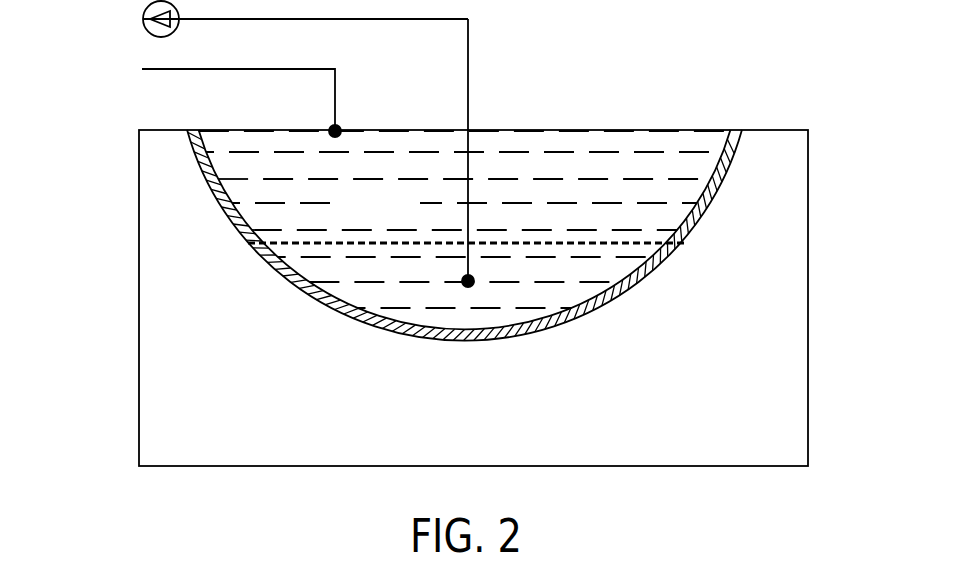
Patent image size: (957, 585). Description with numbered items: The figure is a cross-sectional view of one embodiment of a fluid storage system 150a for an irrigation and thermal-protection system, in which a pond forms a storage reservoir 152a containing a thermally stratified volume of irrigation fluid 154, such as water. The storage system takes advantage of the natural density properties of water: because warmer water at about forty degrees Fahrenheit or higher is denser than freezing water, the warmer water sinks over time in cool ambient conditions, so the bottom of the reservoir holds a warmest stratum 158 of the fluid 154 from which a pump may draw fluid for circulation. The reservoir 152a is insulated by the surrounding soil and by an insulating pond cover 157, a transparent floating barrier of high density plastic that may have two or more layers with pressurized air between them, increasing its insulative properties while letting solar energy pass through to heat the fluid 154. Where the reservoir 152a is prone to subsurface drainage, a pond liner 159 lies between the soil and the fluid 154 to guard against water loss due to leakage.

The fluid storage system 150a is at (455, 265).
The storage reservoir 152a is at (603, 303).
The irrigation fluid 154 is at (359, 214).
The insulating pond cover 157 is at (547, 130).
The warmest stratum 158 is at (348, 291).
The pond liner 159 is at (682, 258).